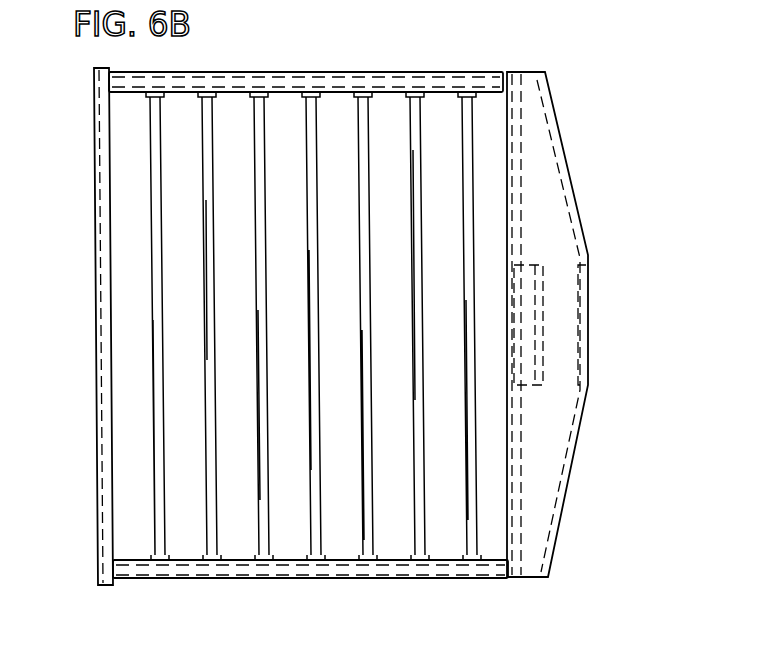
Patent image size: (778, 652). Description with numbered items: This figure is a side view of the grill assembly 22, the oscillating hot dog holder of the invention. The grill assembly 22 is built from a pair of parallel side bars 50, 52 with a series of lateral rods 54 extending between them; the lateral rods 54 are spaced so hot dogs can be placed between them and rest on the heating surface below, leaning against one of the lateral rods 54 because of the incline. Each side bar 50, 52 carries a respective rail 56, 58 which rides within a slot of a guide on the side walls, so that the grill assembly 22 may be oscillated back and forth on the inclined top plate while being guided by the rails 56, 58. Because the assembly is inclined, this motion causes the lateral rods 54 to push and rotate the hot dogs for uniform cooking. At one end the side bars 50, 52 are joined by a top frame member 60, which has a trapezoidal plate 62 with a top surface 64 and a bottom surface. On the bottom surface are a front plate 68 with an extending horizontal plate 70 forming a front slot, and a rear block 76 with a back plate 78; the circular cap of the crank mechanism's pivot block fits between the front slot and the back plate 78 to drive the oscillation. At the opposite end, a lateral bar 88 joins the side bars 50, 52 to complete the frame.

The grill assembly 22 is at (598, 312).
The side bar 50 is at (306, 54).
The side bar 52 is at (310, 604).
The lateral rods 54 is at (312, 525).
The rail 56 is at (242, 78).
The rail 58 is at (187, 571).
The top frame member 60 is at (604, 326).
The trapezoidal plate 62 is at (604, 326).
The top surface 64 is at (548, 492).
The front plate 68 is at (633, 316).
The horizontal plate 70 is at (590, 318).
The rear block 76 is at (593, 271).
The back plate 78 is at (543, 273).
The lateral bar 88 is at (97, 398).